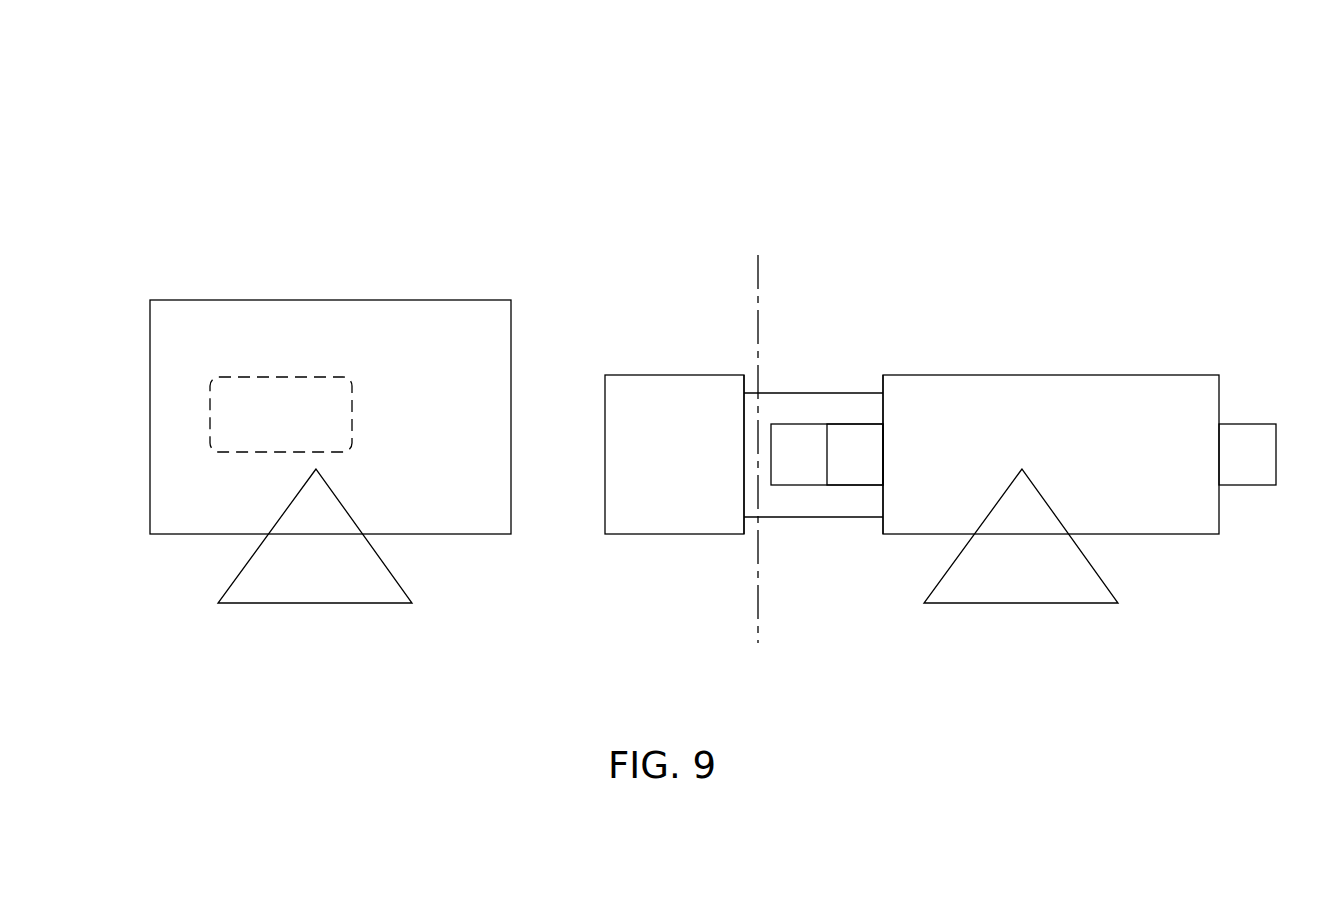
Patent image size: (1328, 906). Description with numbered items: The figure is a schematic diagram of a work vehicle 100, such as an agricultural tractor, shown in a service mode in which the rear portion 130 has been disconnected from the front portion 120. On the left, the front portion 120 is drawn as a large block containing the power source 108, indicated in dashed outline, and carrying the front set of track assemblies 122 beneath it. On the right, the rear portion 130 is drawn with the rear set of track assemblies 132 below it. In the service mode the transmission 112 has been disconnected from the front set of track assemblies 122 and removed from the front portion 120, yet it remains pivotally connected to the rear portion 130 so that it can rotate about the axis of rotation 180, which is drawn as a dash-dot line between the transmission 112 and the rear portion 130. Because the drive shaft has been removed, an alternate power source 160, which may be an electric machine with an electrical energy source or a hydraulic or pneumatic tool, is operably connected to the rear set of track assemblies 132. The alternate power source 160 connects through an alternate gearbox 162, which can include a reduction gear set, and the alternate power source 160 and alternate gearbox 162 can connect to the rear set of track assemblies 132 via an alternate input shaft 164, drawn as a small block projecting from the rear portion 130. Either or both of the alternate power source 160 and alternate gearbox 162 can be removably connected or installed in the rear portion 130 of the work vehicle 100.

The work vehicle 100 is at (328, 97).
The power source 108 is at (297, 405).
The transmission 112 is at (668, 393).
The front portion 120 is at (422, 333).
The front set of track assemblies 122 is at (345, 585).
The rear portion 130 is at (1096, 409).
The rear set of track assemblies 132 is at (998, 588).
The alternate power source 160 is at (792, 442).
The alternate gearbox 162 is at (849, 442).
The alternate input shaft 164 is at (1259, 440).
The axis of rotation 180 is at (757, 275).